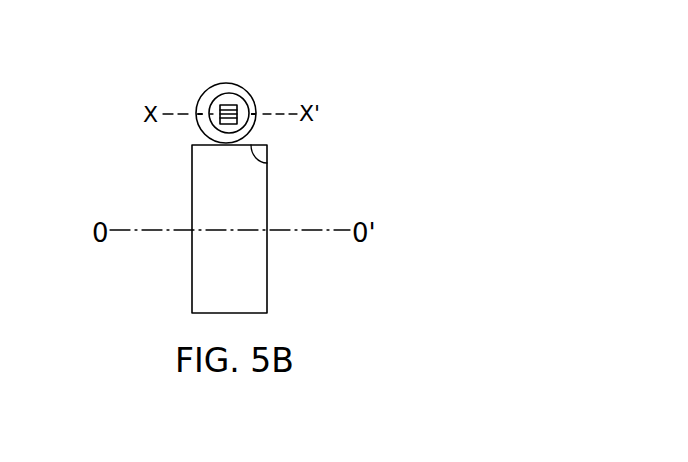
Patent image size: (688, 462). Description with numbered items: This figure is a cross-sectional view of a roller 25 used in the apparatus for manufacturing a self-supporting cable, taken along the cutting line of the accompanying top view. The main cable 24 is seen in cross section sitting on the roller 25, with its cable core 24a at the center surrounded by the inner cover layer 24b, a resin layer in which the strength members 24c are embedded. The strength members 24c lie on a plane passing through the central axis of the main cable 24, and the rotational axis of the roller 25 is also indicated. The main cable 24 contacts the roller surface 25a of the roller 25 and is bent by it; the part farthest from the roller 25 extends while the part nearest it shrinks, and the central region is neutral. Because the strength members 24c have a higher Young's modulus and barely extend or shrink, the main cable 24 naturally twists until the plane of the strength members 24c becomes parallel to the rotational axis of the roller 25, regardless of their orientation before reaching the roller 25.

The main cable 24 is at (239, 83).
The cable core 24a is at (237, 120).
The inner cover layer 24b is at (247, 100).
The strength members 24c is at (254, 112).
The roller 25 is at (270, 196).
The roller surface 25a is at (267, 164).